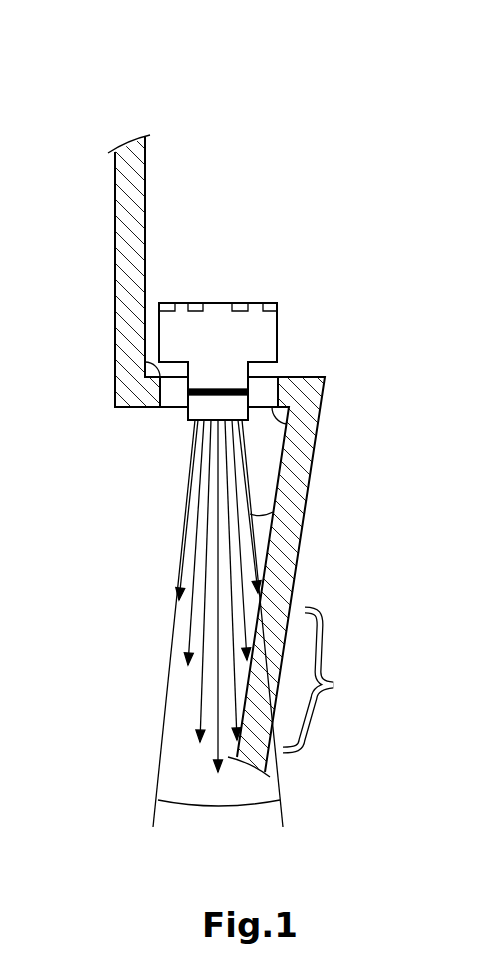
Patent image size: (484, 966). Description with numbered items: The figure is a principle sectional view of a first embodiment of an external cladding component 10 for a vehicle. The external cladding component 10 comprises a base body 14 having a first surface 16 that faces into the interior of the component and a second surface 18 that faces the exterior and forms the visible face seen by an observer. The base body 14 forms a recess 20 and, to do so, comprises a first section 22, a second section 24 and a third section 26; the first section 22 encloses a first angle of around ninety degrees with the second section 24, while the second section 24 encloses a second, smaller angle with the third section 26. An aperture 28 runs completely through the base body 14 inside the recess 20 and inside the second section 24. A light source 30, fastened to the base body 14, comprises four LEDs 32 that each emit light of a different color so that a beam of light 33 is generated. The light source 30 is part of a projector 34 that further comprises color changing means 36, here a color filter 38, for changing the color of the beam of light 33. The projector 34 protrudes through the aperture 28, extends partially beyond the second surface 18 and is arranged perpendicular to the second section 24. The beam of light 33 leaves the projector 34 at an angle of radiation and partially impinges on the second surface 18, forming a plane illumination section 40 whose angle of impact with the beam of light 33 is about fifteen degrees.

The external cladding component 10 is at (108, 82).
The base body 14 is at (242, 456).
The first surface 16 is at (209, 271).
The second surface 18 is at (115, 193).
The recess 20 is at (258, 437).
The first section 22 is at (209, 271).
The second section 24 is at (141, 451).
The third section 26 is at (292, 548).
The aperture 28 is at (173, 398).
The light source 30 is at (286, 356).
The LEDs 32 is at (286, 356).
The beam of light 33 is at (157, 542).
The projector 34 is at (278, 326).
The color changing means 36 is at (301, 359).
The color filter 38 is at (218, 388).
The illumination section 40 is at (332, 680).